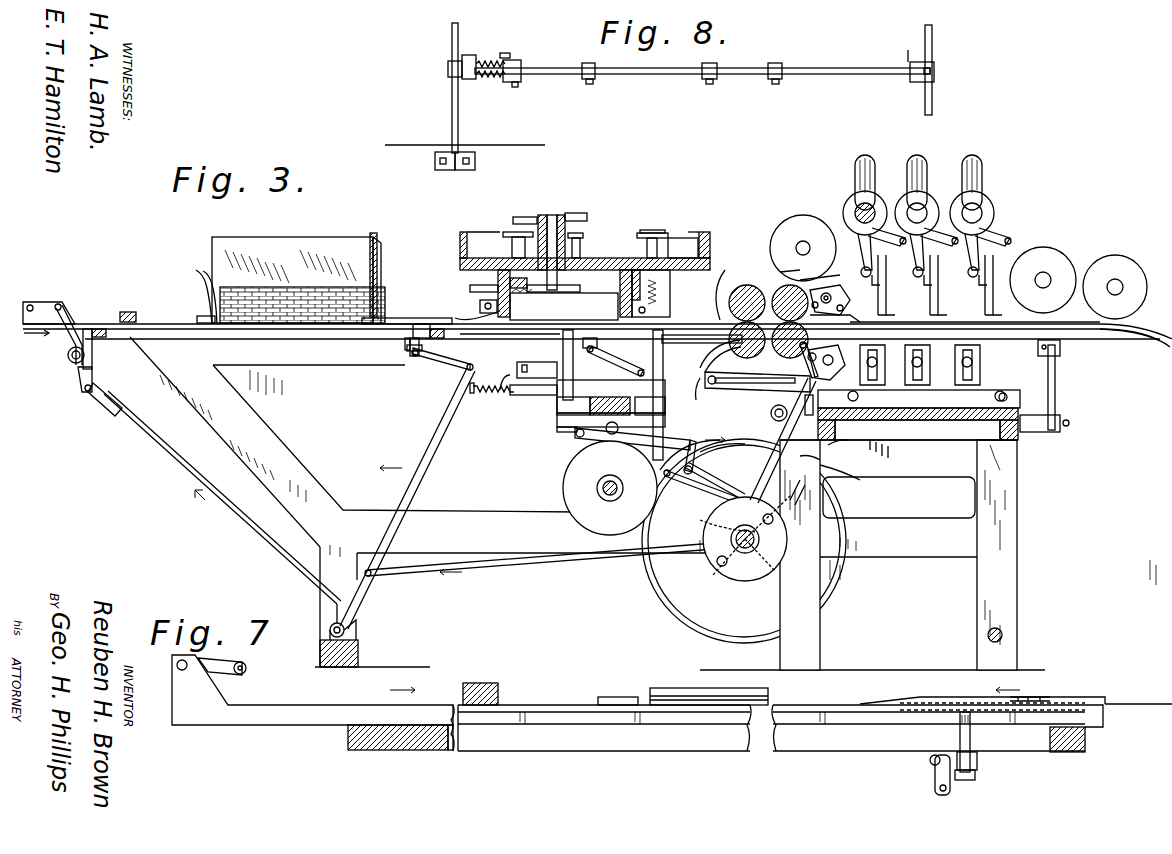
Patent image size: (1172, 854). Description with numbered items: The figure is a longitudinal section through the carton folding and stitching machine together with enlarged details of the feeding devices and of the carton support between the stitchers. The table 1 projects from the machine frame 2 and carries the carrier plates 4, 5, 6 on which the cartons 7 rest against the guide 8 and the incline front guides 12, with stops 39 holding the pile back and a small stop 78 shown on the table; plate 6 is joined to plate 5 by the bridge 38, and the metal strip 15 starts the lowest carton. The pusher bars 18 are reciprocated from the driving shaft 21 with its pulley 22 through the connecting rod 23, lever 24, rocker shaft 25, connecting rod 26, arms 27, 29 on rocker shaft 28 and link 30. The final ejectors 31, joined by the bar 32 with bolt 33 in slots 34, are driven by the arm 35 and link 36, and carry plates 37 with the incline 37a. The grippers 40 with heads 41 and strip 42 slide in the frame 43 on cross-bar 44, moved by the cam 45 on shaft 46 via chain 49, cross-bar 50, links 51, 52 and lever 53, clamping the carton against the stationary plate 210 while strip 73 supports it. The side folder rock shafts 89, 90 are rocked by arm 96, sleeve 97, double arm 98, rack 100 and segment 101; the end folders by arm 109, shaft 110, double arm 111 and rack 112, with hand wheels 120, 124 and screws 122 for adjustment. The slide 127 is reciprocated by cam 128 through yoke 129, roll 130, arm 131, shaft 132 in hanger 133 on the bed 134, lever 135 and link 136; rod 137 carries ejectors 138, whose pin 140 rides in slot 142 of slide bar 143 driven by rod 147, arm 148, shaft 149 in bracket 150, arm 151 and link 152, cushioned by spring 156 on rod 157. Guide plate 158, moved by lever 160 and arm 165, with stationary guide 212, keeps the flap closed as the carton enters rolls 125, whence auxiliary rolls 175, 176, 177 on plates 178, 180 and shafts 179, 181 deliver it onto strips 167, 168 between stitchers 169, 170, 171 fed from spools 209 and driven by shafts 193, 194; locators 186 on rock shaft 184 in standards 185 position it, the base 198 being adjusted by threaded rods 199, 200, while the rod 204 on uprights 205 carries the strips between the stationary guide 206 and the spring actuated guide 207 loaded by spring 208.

In FIG. 3, the table 1 is at (95, 340).
In FIG. 7, the table 1 is at (425, 750).
In FIG. 3, the machine frame 2 is at (285, 458).
In FIG. 3, the carton carrier plate 4 is at (580, 273).
In FIG. 3, the carton carrier plate 5 is at (168, 324).
In FIG. 7, the carton carrier plate 5 is at (812, 704).
In FIG. 3, the carton carrier plate 6 is at (683, 632).
In FIG. 3, the cartons 7 is at (302, 297).
In FIG. 7, the cartons 7 is at (768, 696).
In FIG. 3, the guide 8 is at (296, 280).
In FIG. 3, the incline front guides 12 is at (202, 270).
In FIG. 3, the metal strip 15 is at (196, 316).
In FIG. 7, the metal strip 15 is at (620, 696).
In FIG. 3, the pusher bars 18 is at (128, 335).
In FIG. 7, the pusher bars 18 is at (300, 727).
In FIG. 3, the driving shaft 21 is at (740, 560).
In FIG. 3, the driving pulley 22 is at (764, 638).
In FIG. 3, the connecting rod 23 is at (505, 560).
In FIG. 3, the lever 24 is at (418, 462).
In FIG. 3, the rocker shaft 25 is at (358, 630).
In FIG. 3, the connecting rod 26 is at (275, 545).
In FIG. 3, the arm 27 is at (80, 385).
In FIG. 3, the rocker shaft 28 is at (66, 358).
In FIG. 3, the arm 29 is at (70, 318).
In FIG. 3, the link 30 is at (49, 303).
In FIG. 7, the link 30 is at (250, 664).
In FIG. 3, the final carton ejectors 31 is at (416, 332).
In FIG. 7, the final carton ejectors 31 is at (1095, 728).
In FIG. 3, the bar 32 is at (425, 358).
In FIG. 7, the bar 32 is at (980, 766).
In FIG. 3, the bolt 33 is at (408, 346).
In FIG. 7, the bolt 33 is at (958, 742).
In FIG. 3, the open slots 34 is at (278, 343).
In FIG. 7, the open slots 34 is at (605, 745).
In FIG. 3, the arm 35 is at (416, 344).
In FIG. 7, the arm 35 is at (935, 778).
In FIG. 3, the link 36 is at (426, 360).
In FIG. 3, the plates 37 is at (398, 315).
In FIG. 7, the plates 37 is at (1085, 696).
In FIG. 3, the incline 37a is at (386, 291).
In FIG. 7, the incline 37a is at (925, 700).
In FIG. 7, the bridge 38 is at (485, 683).
In FIG. 3, the stops 39 is at (378, 240).
In FIG. 3, the carton grippers 40 is at (563, 350).
In FIG. 3, the adjustable heads 41 is at (642, 296).
In FIG. 3, the metal strip 42 is at (455, 355).
In FIG. 3, the frame 43 is at (576, 397).
In FIG. 3, the cross-bar 44 is at (556, 426).
In FIG. 3, the cam 45 is at (563, 489).
In FIG. 3, the shaft 46 is at (600, 489).
In FIG. 3, the chain 49 is at (722, 490).
In FIG. 3, the cross-bar 50 is at (610, 436).
In FIG. 3, the link 51 is at (640, 445).
In FIG. 3, the link 52 is at (676, 462).
In FIG. 3, the lever 53 is at (704, 489).
In FIG. 3, the metal strip 73 is at (510, 348).
In FIG. 3, the stop 78 is at (128, 311).
In FIG. 3, the rock shaft 89 is at (644, 309).
In FIG. 3, the rock shaft 90 is at (571, 295).
In FIG. 3, the arm 96 is at (521, 218).
In FIG. 3, the sleeve 97 is at (583, 235).
In FIG. 3, the double arm 98 is at (600, 262).
In FIG. 3, the rack 100 is at (490, 292).
In FIG. 3, the toothed segment 101 is at (480, 304).
In FIG. 3, the arm 109 is at (588, 203).
In FIG. 3, the short vertical rock shaft 110 is at (552, 213).
In FIG. 3, the double arm 111 is at (546, 300).
In FIG. 3, the rack 112 is at (553, 297).
In FIG. 3, the hand wheels 120 is at (507, 230).
In FIG. 3, the screws 122 is at (683, 246).
In FIG. 3, the hand wheels 124 is at (660, 236).
In FIG. 3, the feed and compression rolls 125 is at (768, 336).
In FIG. 3, the slide 127 is at (702, 382).
In FIG. 3, the cam 128 is at (786, 527).
In FIG. 3, the yoke 129 is at (751, 540).
In FIG. 3, the cam roll 130 is at (720, 562).
In FIG. 3, the arm 131 is at (797, 488).
In FIG. 3, the short shaft 132 is at (751, 536).
In FIG. 3, the hanger 133 is at (848, 479).
In FIG. 8, the bed part of the frame 134 is at (465, 135).
In FIG. 3, the bed part of the frame 134 is at (1004, 457).
In FIG. 3, the vertical lever 135 is at (775, 458).
In FIG. 3, the horizontal link 136 is at (740, 390).
In FIG. 3, the rod 137 is at (612, 397).
In FIG. 3, the ejectors 138 is at (611, 388).
In FIG. 3, the pin 140 is at (652, 397).
In FIG. 3, the slot 142 is at (528, 393).
In FIG. 3, the slide bar 143 is at (518, 370).
In FIG. 3, the vertical rod 147 is at (790, 428).
In FIG. 3, the arm 148 is at (787, 416).
In FIG. 3, the short shaft 149 is at (830, 465).
In FIG. 3, the bracket 150 is at (843, 447).
In FIG. 3, the arm 151 is at (884, 449).
In FIG. 3, the horizontal link 152 is at (690, 396).
In FIG. 3, the spring 156 is at (480, 390).
In FIG. 3, the rod 157 is at (507, 396).
In FIG. 3, the guide plate 158 is at (706, 356).
In FIG. 3, the vertical lever 160 is at (810, 405).
In FIG. 3, the arm 165 is at (768, 324).
In FIG. 3, the metal strip 167 is at (1040, 320).
In FIG. 8, the metal strips 168 is at (703, 62).
In FIG. 3, the metal strips 168 is at (1135, 339).
In FIG. 3, the wire stitching machine 169 is at (977, 158).
In FIG. 3, the wire stitching machine 170 is at (922, 158).
In FIG. 3, the wire stitching machine 171 is at (870, 158).
In FIG. 3, the auxiliary roll 175 is at (776, 274).
In FIG. 3, the auxiliary roll 176 is at (929, 297).
In FIG. 3, the lower auxiliary roll 177 is at (844, 313).
In FIG. 3, the plate 178 is at (817, 275).
In FIG. 3, the shaft 179 is at (832, 295).
In FIG. 3, the plate 180 is at (826, 357).
In FIG. 3, the shaft 181 is at (803, 360).
In FIG. 3, the rock shaft 184 is at (856, 395).
In FIG. 3, the standards 185 is at (843, 430).
In FIG. 3, the carton locators 186 is at (920, 365).
In FIG. 3, the short shafts 193 is at (965, 205).
In FIG. 3, the long shaft 194 is at (846, 203).
In FIG. 3, the base 198 is at (990, 430).
In FIG. 3, the threaded rod 199 is at (1008, 392).
In FIG. 3, the threaded rod 200 is at (918, 424).
In FIG. 8, the rod 204 is at (875, 75).
In FIG. 3, the rod 204 is at (1060, 350).
In FIG. 8, the uprights 205 is at (452, 105).
In FIG. 3, the uprights 205 is at (1058, 390).
In FIG. 8, the stationary guide 206 is at (909, 58).
In FIG. 8, the spring actuated guide 207 is at (508, 58).
In FIG. 8, the spring 208 is at (492, 78).
In FIG. 3, the spools 209 is at (1100, 245).
In FIG. 3, the stationary plate 210 is at (728, 268).
In FIG. 3, the stationary guide 212 is at (613, 357).